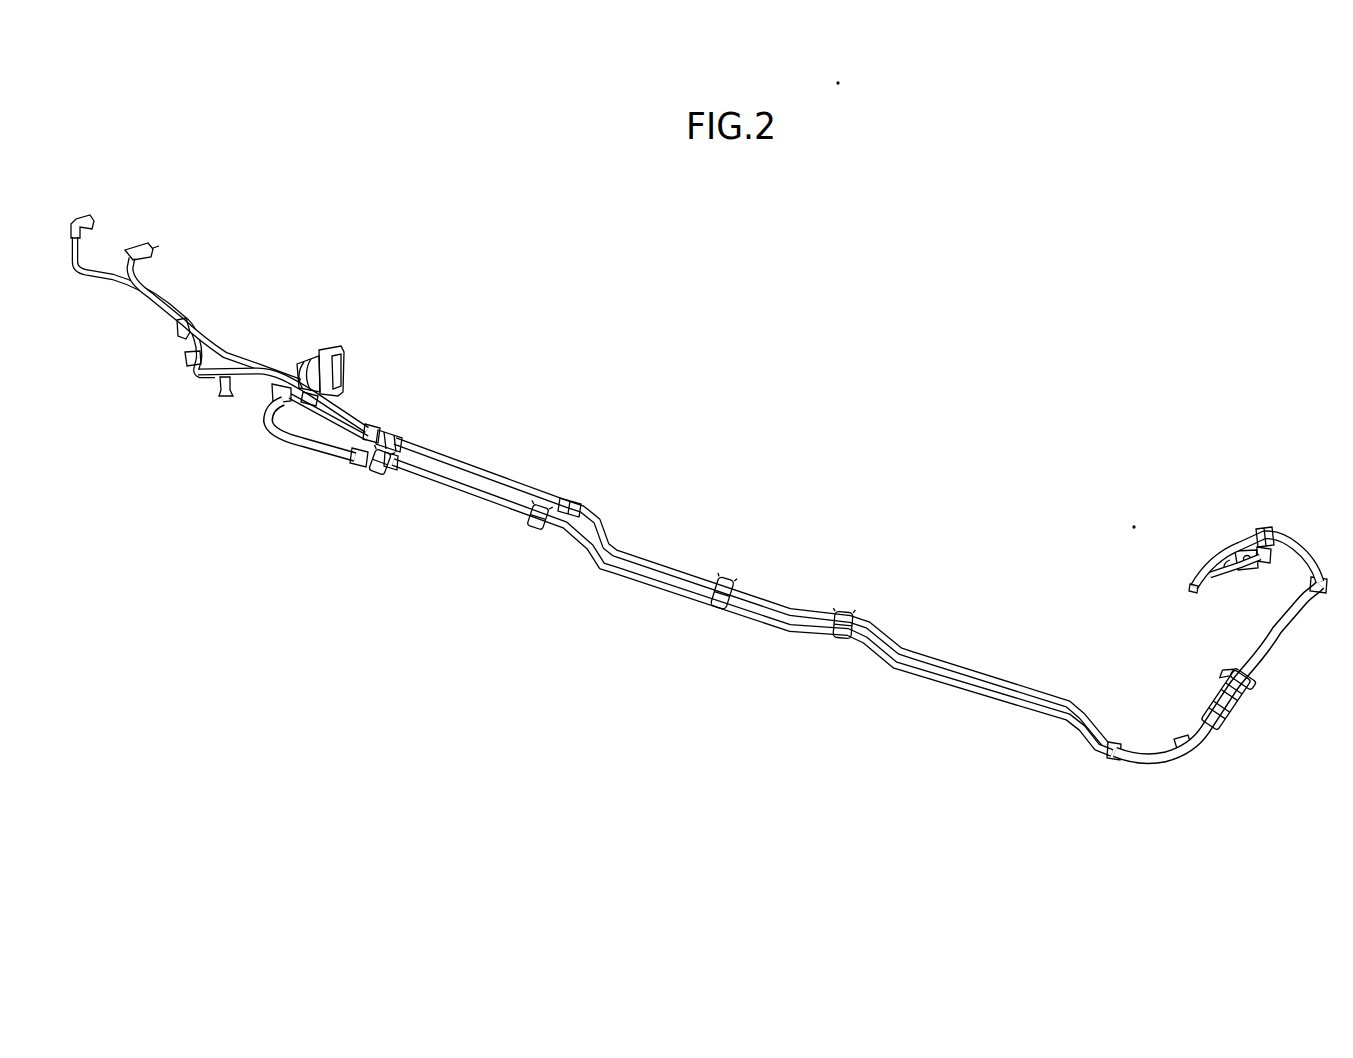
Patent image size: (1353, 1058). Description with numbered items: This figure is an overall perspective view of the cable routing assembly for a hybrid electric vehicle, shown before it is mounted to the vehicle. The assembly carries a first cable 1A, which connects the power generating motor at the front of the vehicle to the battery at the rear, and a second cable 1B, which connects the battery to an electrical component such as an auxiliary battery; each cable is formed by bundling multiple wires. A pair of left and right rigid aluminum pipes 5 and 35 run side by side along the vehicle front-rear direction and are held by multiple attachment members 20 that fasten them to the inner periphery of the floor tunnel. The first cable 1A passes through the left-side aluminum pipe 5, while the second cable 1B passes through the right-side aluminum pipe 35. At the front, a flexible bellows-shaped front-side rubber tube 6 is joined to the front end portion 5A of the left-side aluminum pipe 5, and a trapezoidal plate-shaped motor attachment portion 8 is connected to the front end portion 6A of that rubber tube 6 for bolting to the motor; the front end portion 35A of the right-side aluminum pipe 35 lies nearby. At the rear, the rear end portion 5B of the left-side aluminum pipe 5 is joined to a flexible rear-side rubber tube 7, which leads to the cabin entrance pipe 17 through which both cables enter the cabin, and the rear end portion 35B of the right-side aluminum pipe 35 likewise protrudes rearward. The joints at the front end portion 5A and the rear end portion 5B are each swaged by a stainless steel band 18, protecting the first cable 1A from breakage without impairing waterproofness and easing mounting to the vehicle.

The first cable 1A is at (1280, 556).
The second cable 1B is at (1275, 536).
The left-side aluminum pipe 5 is at (497, 518).
The front end portion of the left-side aluminum pipe 5A is at (398, 472).
The rear end portion of the left-side aluminum pipe 5B is at (1096, 762).
The front-side rubber tube 6 is at (290, 447).
The front end portion of the front-side rubber tube 6A is at (268, 400).
The rear-side rubber tube 7 is at (1198, 715).
The motor attachment portion 8 is at (352, 368).
The cabin entrance pipe 17 is at (1245, 707).
The stainless steel band 18 is at (356, 458).
The attachment member 20 is at (378, 474).
The right-side aluminum pipe 35 is at (547, 492).
The front end portion of the right-side aluminum pipe 35A is at (412, 440).
The rear end portion of the right-side aluminum pipe 35B is at (1110, 740).